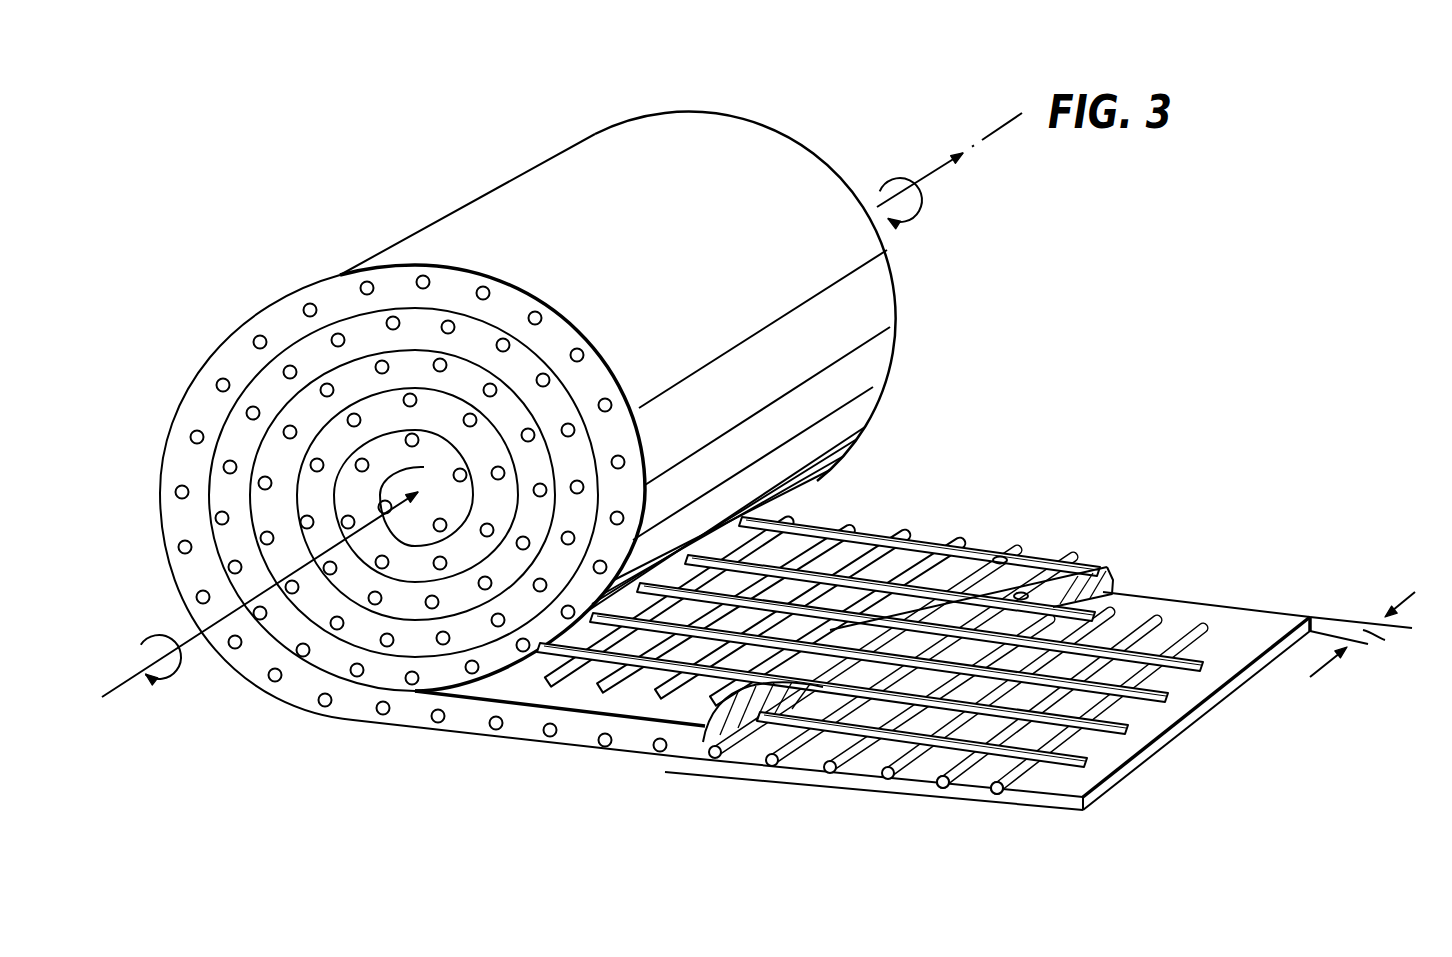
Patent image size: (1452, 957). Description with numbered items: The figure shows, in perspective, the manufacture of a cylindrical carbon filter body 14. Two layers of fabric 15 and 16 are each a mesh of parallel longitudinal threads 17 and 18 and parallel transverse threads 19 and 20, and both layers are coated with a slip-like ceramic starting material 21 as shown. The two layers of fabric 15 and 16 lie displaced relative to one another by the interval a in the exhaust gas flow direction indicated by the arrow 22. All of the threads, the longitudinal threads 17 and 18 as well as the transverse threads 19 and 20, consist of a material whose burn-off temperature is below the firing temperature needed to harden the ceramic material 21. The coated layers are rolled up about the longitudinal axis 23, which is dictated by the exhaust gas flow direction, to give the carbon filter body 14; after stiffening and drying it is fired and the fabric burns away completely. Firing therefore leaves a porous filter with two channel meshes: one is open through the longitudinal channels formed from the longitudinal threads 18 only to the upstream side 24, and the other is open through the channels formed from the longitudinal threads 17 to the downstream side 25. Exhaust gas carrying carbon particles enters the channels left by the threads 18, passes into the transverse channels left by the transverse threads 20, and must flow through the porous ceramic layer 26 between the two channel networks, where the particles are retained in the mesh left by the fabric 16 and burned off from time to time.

The carbon filter body 14 is at (208, 357).
The layer of fabric 15 is at (813, 592).
The layer of fabric 16 is at (1067, 673).
The longitudinal threads 17 is at (950, 540).
The longitudinal threads 18 is at (880, 756).
The transverse threads 19 is at (1021, 594).
The transverse threads 20 is at (1053, 752).
The slip-like ceramic starting material 21 is at (585, 690).
The exhaust gas flow direction arrow 22 is at (223, 617).
The longitudinal axis 23 is at (141, 681).
The upstream side 24 is at (380, 657).
The downstream side 25 is at (899, 330).
The porous ceramic layer 26 is at (827, 693).